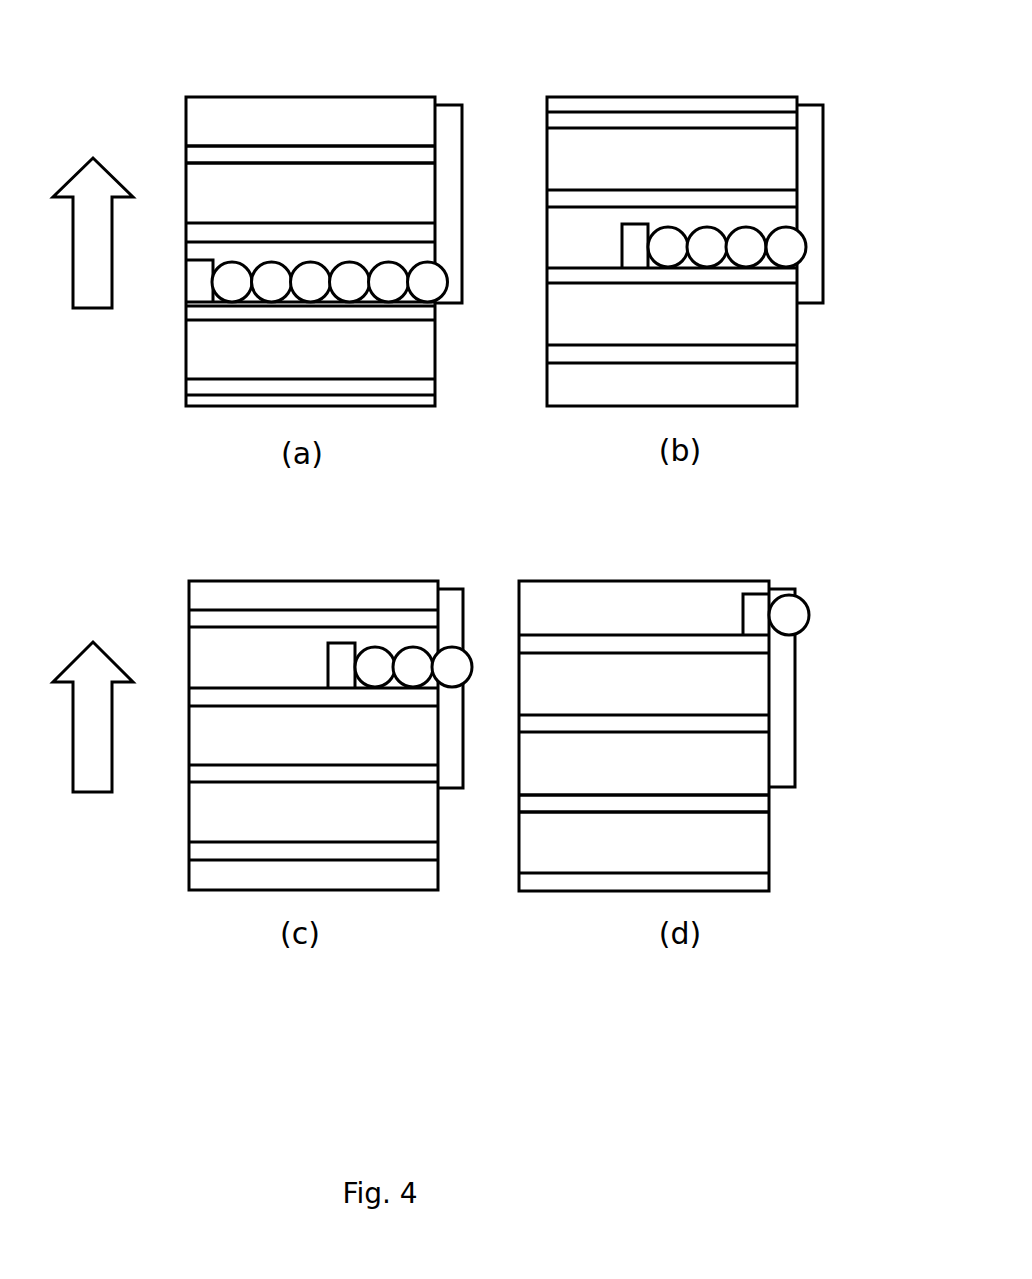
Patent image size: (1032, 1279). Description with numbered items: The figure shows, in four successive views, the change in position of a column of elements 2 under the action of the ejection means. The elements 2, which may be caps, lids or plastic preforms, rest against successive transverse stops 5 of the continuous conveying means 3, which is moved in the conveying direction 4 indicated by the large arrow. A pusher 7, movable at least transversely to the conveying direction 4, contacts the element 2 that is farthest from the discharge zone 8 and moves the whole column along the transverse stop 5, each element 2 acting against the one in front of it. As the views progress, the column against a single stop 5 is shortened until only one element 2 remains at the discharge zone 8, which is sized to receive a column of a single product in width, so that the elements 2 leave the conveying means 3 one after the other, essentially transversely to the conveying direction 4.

The element 2 is at (422, 284).
The conveying means 3 is at (211, 347).
The conveying direction 4 is at (93, 190).
The transverse stop 5 is at (306, 156).
The pusher 7 is at (633, 243).
The discharge zone 8 is at (447, 141).